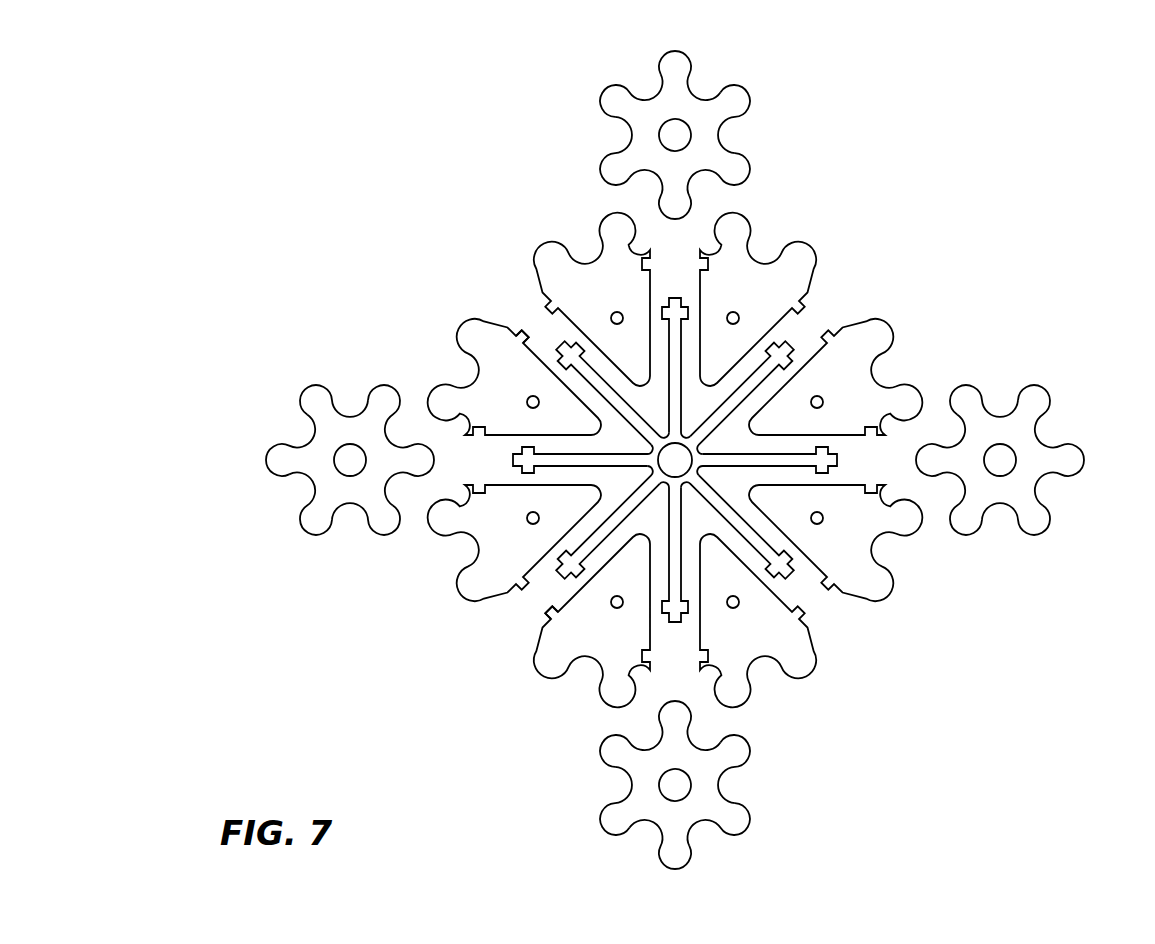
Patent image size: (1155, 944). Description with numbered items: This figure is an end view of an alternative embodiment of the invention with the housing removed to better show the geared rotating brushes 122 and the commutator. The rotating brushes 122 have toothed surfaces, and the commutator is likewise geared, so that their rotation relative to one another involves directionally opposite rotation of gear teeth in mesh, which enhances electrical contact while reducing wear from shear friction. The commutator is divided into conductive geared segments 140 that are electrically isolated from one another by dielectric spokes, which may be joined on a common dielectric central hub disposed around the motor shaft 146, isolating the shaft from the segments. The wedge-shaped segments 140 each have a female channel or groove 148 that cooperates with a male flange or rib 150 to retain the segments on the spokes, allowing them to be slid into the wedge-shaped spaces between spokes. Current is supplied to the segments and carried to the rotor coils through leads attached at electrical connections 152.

The rotating brushes 122 is at (604, 92).
The conductive geared segments 140 is at (537, 250).
The motor shaft 146 is at (668, 456).
The female channel or groove 148 is at (520, 337).
The male flange or rib 150 is at (513, 455).
The electrical connections 152 is at (612, 312).